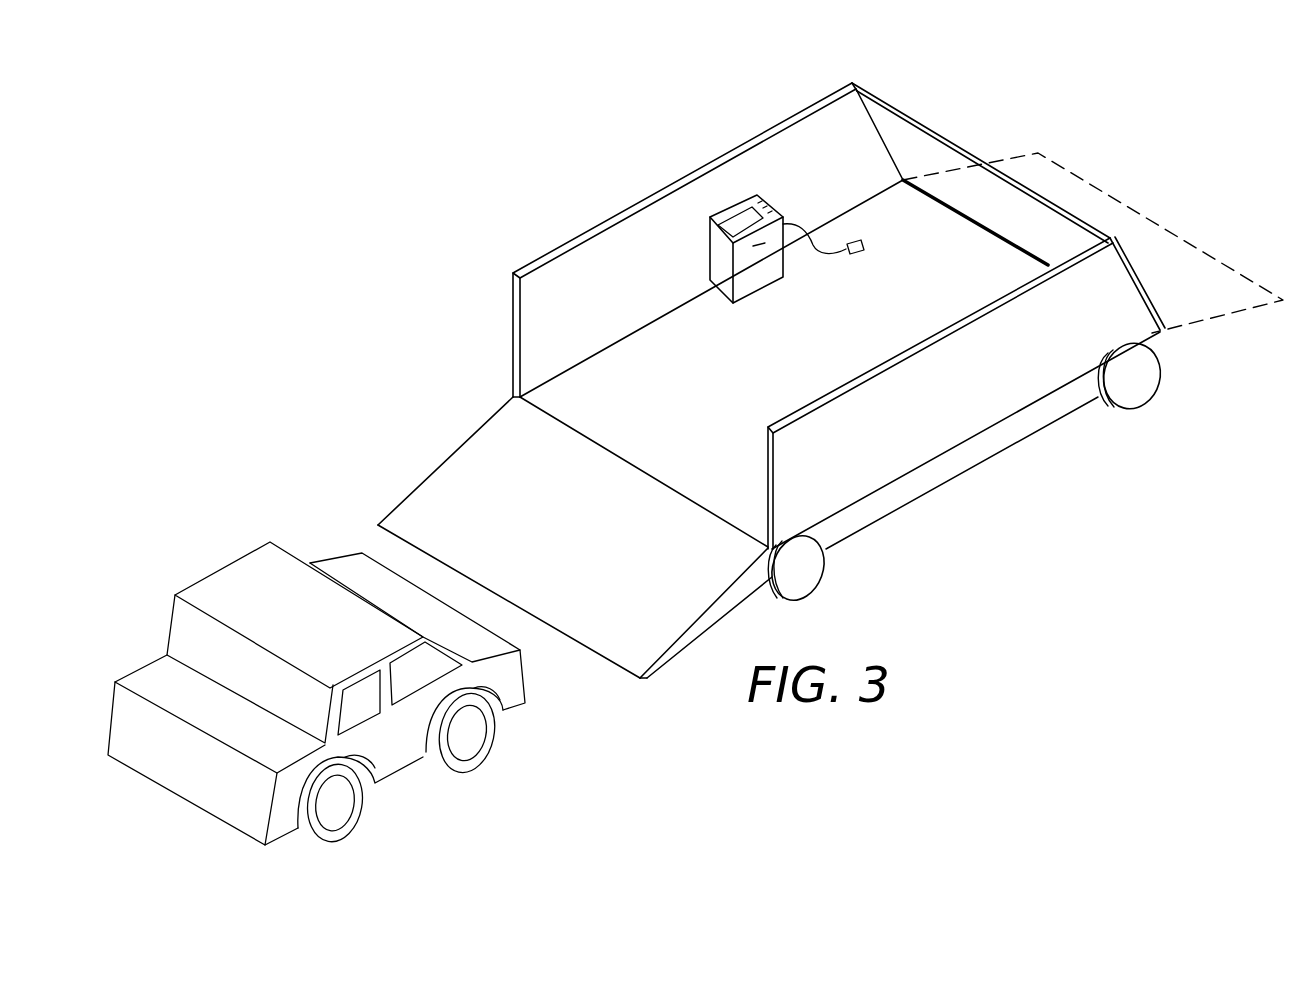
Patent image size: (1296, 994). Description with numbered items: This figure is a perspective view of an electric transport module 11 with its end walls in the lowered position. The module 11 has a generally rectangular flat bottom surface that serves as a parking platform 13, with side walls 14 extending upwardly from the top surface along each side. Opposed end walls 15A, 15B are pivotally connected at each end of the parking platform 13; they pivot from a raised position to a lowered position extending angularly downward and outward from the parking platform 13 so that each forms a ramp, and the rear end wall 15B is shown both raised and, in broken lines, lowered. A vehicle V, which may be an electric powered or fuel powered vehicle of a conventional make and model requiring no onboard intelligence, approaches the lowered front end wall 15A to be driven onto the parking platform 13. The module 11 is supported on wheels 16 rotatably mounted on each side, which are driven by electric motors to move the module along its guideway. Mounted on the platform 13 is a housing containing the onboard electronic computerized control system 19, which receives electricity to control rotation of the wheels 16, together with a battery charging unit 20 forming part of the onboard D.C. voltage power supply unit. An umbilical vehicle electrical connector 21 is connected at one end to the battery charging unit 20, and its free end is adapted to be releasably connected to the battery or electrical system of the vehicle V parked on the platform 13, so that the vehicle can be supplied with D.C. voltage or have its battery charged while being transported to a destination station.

The electric transport module 11 is at (910, 93).
The parking platform 13 is at (740, 373).
The side walls 14 is at (623, 208).
The end wall 15A is at (463, 447).
The end wall 15B is at (955, 140).
The wheels 16 is at (1145, 385).
The onboard electronic computerized control system 19 is at (765, 198).
The battery charging unit 20 is at (757, 278).
The umbilical vehicle electrical connector 21 is at (858, 242).
The vehicle V is at (236, 570).